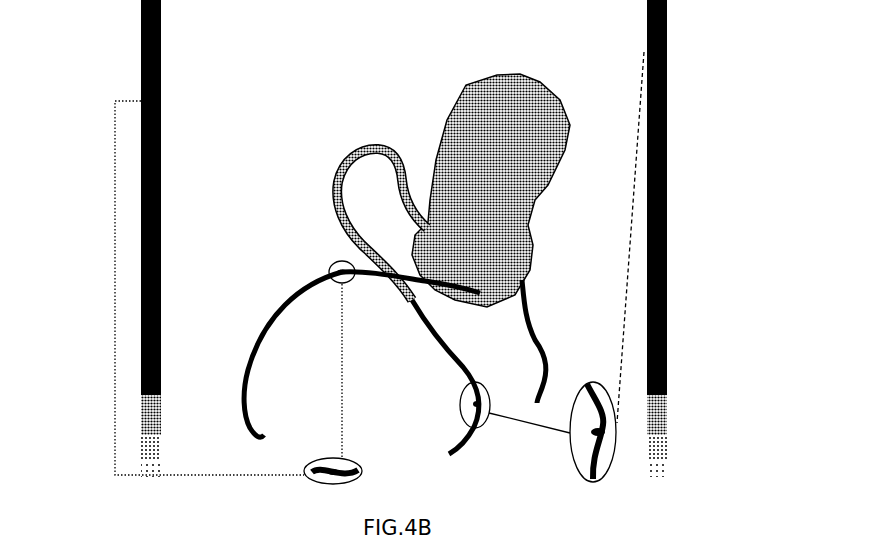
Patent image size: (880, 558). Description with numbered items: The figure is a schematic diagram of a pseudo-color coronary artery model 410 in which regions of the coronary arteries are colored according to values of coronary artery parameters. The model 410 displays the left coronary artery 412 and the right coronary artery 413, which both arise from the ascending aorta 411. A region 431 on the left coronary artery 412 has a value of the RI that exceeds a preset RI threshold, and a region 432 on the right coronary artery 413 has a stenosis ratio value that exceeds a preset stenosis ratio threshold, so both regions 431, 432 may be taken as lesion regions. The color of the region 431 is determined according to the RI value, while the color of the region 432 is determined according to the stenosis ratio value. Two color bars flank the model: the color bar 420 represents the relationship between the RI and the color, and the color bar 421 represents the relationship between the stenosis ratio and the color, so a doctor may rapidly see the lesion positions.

The pseudo-color coronary artery model 410 is at (389, 279).
The ascending aorta 411 is at (468, 93).
The left coronary artery 412 is at (332, 186).
The right coronary artery 413 is at (262, 335).
The color bar 420 is at (667, 36).
The color bar 421 is at (140, 30).
The region 431 is at (487, 412).
The region 432 is at (351, 280).